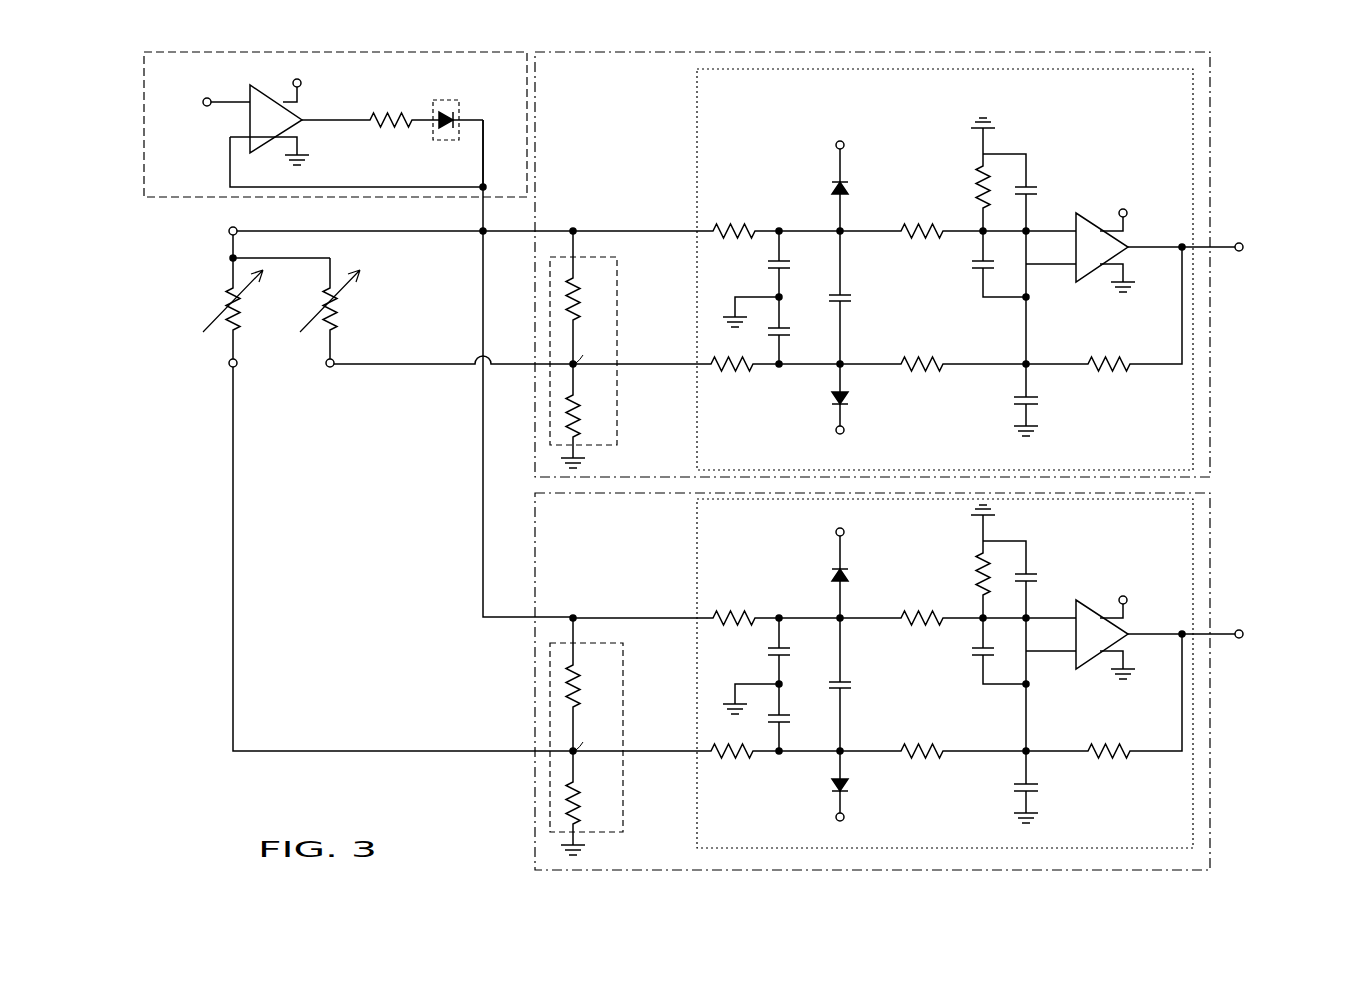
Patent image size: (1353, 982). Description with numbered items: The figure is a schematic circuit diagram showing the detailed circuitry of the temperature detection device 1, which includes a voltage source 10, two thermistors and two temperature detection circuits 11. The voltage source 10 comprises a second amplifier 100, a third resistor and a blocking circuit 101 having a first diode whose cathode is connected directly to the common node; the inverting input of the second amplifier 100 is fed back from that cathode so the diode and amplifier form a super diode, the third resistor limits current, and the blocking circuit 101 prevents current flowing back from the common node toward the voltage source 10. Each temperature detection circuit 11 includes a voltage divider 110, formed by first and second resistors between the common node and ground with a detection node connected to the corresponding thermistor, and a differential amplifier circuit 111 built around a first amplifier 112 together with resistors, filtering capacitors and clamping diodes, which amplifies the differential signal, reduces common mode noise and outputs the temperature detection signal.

The temperature detection device 1 is at (1343, 97).
The voltage source 10 is at (144, 122).
The second amplifier 100 is at (299, 113).
The blocking circuit 101 is at (460, 112).
The temperature detection circuit 11 is at (1212, 158).
The voltage divider 110 is at (618, 432).
The differential amplifier circuit 111 is at (697, 160).
The first amplifier 112 is at (1128, 243).